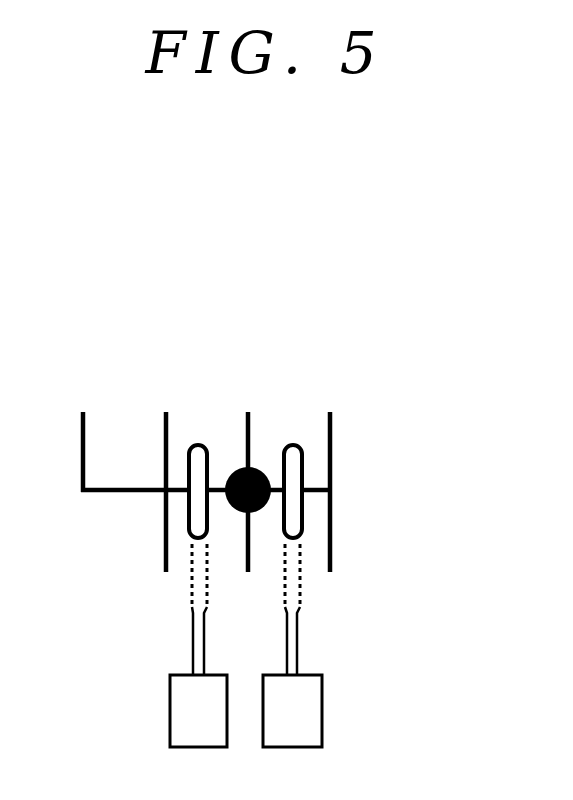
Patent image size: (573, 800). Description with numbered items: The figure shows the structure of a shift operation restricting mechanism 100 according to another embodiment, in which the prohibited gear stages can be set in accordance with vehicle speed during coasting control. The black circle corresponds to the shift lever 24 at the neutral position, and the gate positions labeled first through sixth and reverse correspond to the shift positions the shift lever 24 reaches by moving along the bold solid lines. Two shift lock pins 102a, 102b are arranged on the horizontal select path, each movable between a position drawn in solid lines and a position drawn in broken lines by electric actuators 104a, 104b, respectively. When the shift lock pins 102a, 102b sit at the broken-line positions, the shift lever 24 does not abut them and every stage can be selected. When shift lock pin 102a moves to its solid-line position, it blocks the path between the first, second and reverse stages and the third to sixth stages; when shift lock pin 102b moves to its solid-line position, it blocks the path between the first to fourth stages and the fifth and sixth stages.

The shift operation restricting mechanism 100 is at (400, 416).
The shift lever 24 is at (258, 470).
The shift lock pin 102a is at (197, 447).
The shift lock pin 102b is at (289, 447).
The electric actuator 104a is at (190, 713).
The electric actuator 104b is at (300, 720).